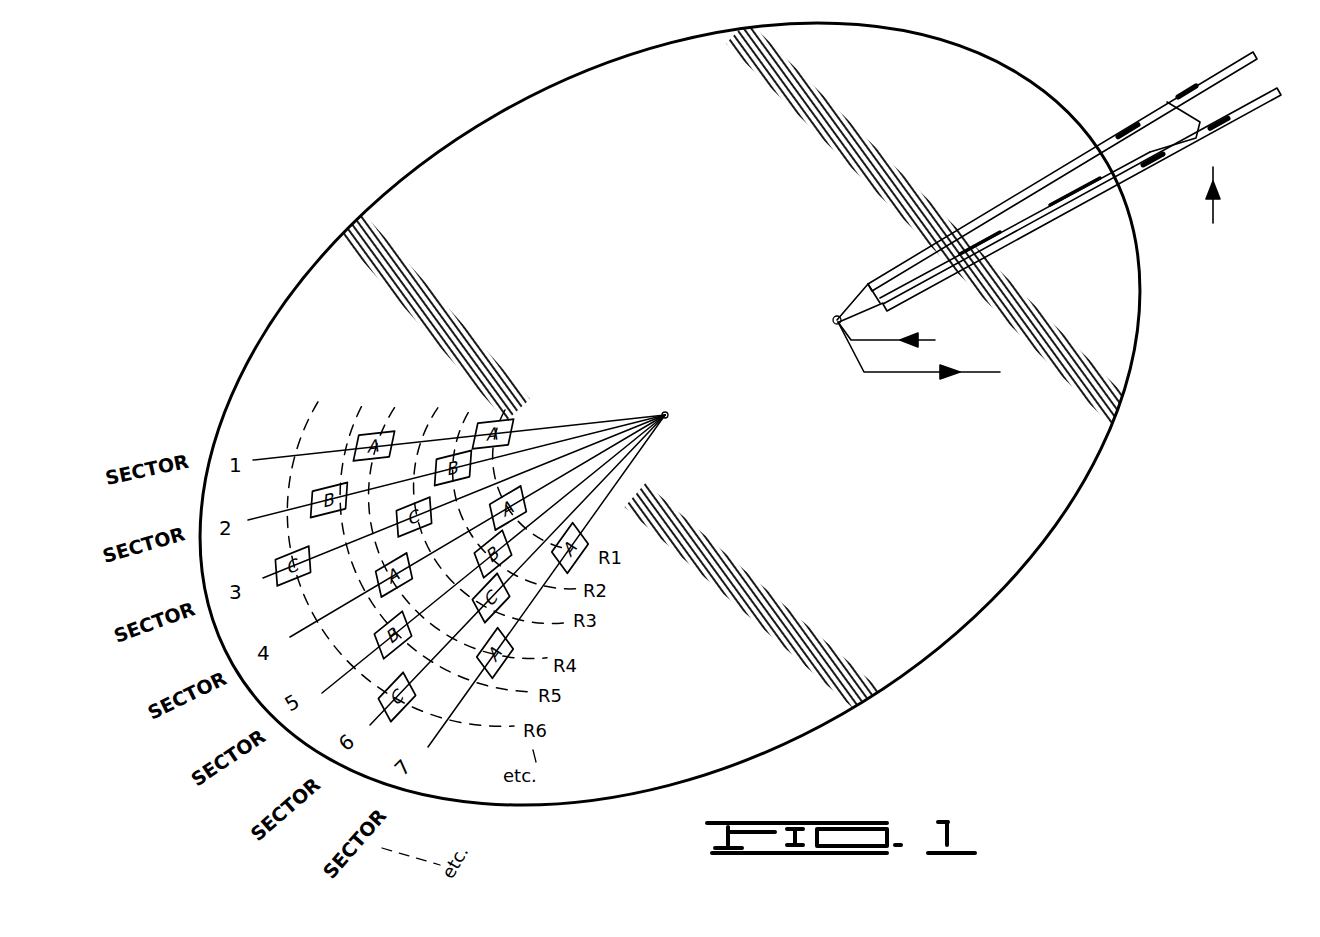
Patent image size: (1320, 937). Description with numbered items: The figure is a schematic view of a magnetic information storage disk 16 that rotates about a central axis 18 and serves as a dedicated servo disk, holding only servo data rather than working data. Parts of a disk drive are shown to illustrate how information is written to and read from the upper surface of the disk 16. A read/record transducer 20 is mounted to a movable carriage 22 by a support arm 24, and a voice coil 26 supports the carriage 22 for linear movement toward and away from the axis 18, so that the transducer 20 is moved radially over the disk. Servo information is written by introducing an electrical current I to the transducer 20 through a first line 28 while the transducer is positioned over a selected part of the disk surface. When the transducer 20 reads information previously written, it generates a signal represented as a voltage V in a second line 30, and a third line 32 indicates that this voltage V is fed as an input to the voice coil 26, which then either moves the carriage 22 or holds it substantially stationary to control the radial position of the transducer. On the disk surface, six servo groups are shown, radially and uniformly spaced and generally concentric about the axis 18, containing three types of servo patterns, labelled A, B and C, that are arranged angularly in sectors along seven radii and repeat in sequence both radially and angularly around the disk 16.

The magnetic information storage disk 16 is at (497, 147).
The central axis 18 is at (662, 412).
The read/record transducer 20 is at (834, 317).
The movable carriage 22 is at (1178, 118).
The support arm 24 is at (867, 298).
The voice coil 26 is at (1227, 63).
The first line 28 is at (884, 338).
The second line 30 is at (897, 375).
The third line 32 is at (1213, 168).